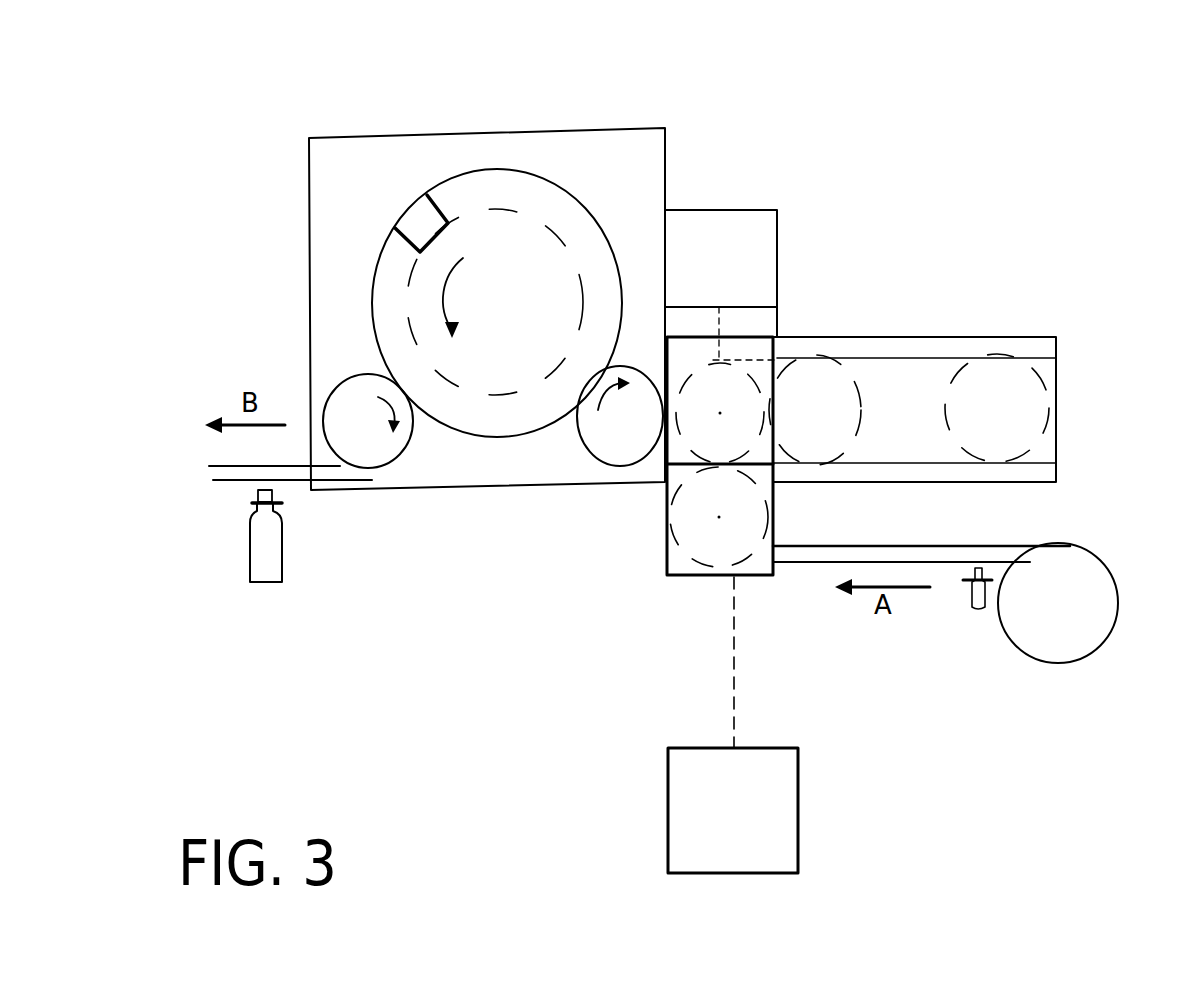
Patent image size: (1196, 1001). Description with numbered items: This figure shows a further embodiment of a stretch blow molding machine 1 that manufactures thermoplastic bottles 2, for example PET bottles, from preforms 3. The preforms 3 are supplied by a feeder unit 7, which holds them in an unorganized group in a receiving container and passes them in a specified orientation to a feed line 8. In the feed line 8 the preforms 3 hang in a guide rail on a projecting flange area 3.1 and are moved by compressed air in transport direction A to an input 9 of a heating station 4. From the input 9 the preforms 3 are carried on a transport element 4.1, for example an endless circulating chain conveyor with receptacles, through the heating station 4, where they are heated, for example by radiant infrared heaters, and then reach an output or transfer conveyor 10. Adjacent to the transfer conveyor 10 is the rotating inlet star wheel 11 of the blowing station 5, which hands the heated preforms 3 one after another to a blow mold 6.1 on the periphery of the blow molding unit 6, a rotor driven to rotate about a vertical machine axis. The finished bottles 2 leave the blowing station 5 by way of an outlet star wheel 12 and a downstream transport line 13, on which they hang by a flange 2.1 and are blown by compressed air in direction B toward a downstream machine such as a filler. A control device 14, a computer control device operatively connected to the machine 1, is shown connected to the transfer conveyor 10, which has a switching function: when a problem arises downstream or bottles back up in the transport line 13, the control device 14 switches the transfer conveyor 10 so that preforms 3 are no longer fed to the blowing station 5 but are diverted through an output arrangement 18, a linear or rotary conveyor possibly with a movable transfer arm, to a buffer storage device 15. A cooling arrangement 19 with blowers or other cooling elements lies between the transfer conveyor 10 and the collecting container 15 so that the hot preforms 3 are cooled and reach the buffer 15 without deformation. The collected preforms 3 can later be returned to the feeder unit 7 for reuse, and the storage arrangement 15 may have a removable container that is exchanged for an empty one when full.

The stretch blow molding machine 1 is at (808, 130).
The bottle 2 is at (277, 550).
The flange 2.1 is at (253, 505).
The preform 3 is at (976, 605).
The projecting flange area 3.1 is at (992, 580).
The heating station 4 is at (960, 333).
The transport element 4.1 is at (910, 358).
The blowing station 5 is at (540, 112).
The blow molding unit 6 is at (573, 195).
The blow mold 6.1 is at (425, 228).
The feeder unit 7 is at (1115, 607).
The feed line 8 is at (890, 550).
The input 9 is at (695, 563).
The transfer conveyor 10 is at (747, 365).
The inlet star wheel 11 is at (615, 443).
The outlet star wheel 12 is at (383, 450).
The transport line 13 is at (210, 478).
The control device 14 is at (733, 725).
The buffer storage device 15 is at (747, 268).
The output arrangement 18 is at (704, 324).
The cooling arrangement 19 is at (752, 318).